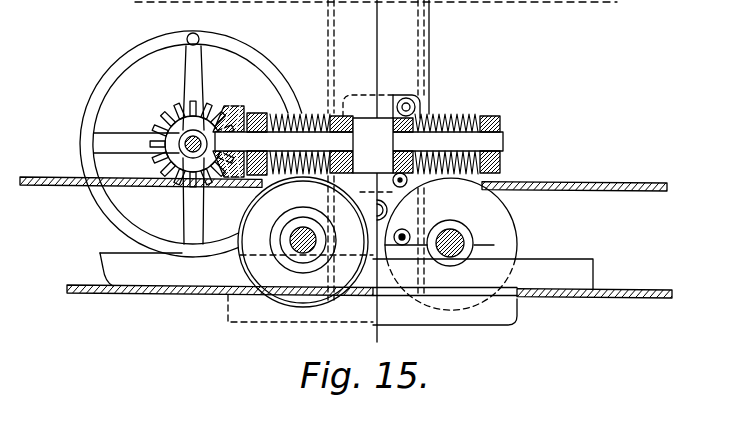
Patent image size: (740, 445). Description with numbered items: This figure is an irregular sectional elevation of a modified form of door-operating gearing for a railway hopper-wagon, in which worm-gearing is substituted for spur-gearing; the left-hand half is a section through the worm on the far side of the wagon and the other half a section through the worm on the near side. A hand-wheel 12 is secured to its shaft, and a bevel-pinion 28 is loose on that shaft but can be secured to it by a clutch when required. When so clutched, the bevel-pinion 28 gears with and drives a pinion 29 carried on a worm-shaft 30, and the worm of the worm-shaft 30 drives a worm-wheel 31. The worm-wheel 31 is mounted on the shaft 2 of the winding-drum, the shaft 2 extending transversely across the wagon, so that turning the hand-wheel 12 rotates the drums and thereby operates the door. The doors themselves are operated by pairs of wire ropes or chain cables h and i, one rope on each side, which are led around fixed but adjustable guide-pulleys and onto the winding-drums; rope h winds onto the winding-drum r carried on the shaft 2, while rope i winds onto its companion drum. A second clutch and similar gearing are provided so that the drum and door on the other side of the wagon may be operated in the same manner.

The hand-wheel 12 is at (118, 70).
The bevel-pinion 28 is at (137, 116).
The pinion 29 is at (233, 111).
The worm-shaft 30 is at (521, 149).
The worm-wheel 31 is at (256, 198).
The shaft 2 is at (291, 237).
The wire rope i is at (631, 183).
The wire rope h is at (63, 186).
The winding-drum r is at (336, 228).